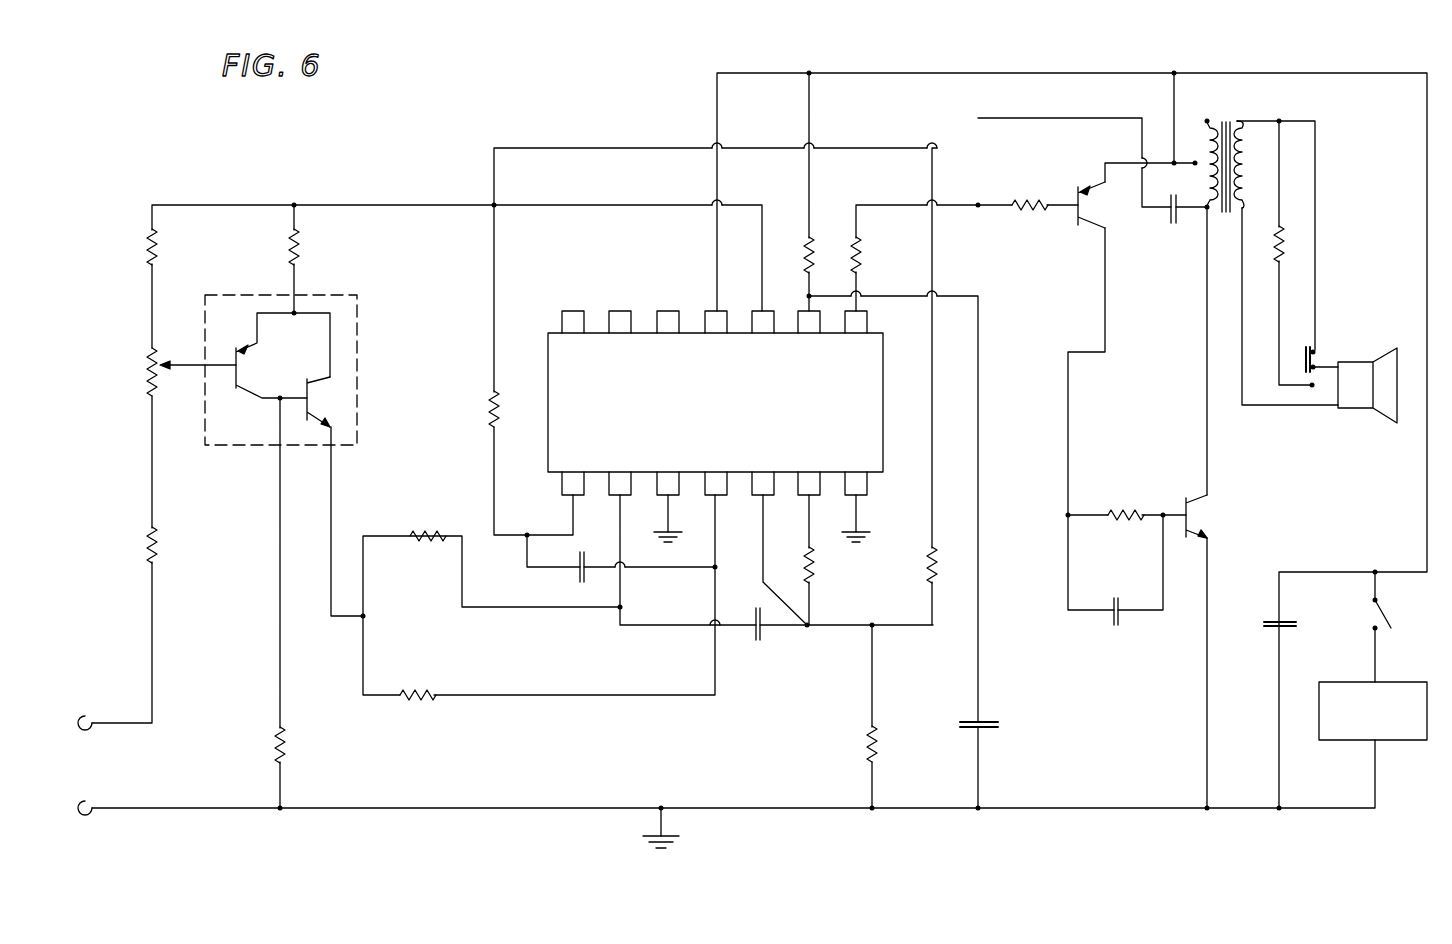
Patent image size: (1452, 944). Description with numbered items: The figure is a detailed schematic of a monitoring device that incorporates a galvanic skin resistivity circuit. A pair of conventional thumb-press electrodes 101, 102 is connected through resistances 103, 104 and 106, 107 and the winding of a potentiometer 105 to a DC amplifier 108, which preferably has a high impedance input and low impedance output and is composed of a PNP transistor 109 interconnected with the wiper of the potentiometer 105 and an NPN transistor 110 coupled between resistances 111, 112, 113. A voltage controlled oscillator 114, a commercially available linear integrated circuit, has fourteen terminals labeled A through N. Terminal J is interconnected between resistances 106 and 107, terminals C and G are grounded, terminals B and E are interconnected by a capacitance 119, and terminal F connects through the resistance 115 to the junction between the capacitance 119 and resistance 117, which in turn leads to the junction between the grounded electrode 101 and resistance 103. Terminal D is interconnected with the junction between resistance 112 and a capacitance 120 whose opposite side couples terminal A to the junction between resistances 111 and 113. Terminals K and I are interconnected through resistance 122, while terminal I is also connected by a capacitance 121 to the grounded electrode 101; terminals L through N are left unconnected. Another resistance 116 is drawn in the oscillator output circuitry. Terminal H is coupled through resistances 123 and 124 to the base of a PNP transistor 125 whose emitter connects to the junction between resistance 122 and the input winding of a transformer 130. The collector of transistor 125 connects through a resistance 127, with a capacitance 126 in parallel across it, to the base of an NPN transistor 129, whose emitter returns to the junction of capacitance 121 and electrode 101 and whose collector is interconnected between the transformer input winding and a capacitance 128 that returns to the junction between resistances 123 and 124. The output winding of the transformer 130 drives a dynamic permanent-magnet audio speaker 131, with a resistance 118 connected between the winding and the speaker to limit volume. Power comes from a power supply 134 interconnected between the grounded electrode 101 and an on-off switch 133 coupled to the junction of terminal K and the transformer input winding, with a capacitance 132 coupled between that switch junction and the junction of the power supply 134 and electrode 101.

The thumb-press electrode 101 is at (82, 800).
The thumb-press electrode 102 is at (83, 714).
The resistance 103 is at (285, 733).
The resistance 104 is at (158, 548).
The potentiometer 105 is at (136, 362).
The resistance 106 is at (158, 243).
The resistance 107 is at (300, 240).
The DC amplifier 108 is at (352, 292).
The PNP transistor 109 is at (244, 398).
The NPN transistor 110 is at (310, 364).
The resistance 111 is at (422, 528).
The resistance 112 is at (418, 686).
The resistance 113 is at (486, 409).
The voltage controlled oscillator 114 is at (547, 332).
The resistance 115 is at (814, 578).
The resistor 116 is at (926, 570).
The resistance 117 is at (866, 744).
The resistance 118 is at (1284, 250).
The capacitance 119 is at (757, 646).
The capacitance 120 is at (576, 578).
The capacitance 121 is at (990, 722).
The resistance 122 is at (801, 248).
The resistance 123 is at (862, 254).
The resistance 124 is at (1022, 214).
The PNP transistor 125 is at (1090, 232).
The capacitance 126 is at (1120, 628).
The resistance 127 is at (1122, 504).
The capacitance 128 is at (1170, 223).
The NPN transistor 129 is at (1210, 515).
The transformer 130 is at (1228, 122).
The audio speaker 131 is at (1358, 411).
The capacitance 132 is at (1276, 630).
The on-off switch 133 is at (1386, 612).
The power supply 134 is at (1342, 742).